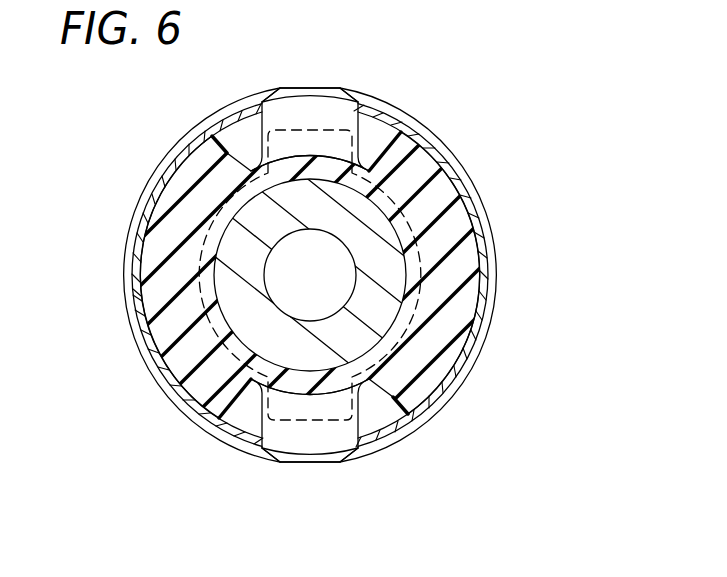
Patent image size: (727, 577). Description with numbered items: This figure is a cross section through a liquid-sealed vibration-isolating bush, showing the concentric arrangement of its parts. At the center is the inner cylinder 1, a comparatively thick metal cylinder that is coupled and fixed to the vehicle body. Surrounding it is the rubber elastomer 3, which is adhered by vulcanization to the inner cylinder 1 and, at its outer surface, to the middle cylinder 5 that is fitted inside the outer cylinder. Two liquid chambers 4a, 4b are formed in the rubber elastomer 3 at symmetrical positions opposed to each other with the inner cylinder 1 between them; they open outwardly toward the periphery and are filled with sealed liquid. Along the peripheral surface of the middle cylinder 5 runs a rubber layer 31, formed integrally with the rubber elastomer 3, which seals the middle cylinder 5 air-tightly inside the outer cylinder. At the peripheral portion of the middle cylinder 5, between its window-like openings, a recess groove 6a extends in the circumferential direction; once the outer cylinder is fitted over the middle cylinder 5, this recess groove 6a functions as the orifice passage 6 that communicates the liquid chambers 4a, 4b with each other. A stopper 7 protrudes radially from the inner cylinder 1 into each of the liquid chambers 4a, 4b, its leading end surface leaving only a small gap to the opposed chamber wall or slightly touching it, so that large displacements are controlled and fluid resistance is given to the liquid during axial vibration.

The inner cylinder 1 is at (347, 227).
The rubber elastomer 3 is at (437, 300).
The liquid chamber 4a is at (380, 423).
The liquid chamber 4b is at (378, 142).
The middle cylinder 5 is at (480, 355).
The orifice passage 6 is at (148, 228).
The recess groove 6a is at (148, 228).
The stopper 7 is at (346, 96).
The rubber layer 31 is at (462, 387).